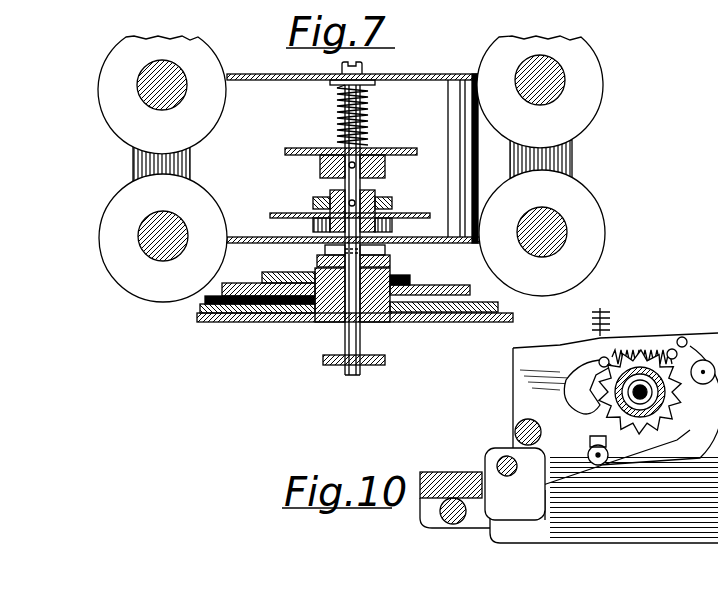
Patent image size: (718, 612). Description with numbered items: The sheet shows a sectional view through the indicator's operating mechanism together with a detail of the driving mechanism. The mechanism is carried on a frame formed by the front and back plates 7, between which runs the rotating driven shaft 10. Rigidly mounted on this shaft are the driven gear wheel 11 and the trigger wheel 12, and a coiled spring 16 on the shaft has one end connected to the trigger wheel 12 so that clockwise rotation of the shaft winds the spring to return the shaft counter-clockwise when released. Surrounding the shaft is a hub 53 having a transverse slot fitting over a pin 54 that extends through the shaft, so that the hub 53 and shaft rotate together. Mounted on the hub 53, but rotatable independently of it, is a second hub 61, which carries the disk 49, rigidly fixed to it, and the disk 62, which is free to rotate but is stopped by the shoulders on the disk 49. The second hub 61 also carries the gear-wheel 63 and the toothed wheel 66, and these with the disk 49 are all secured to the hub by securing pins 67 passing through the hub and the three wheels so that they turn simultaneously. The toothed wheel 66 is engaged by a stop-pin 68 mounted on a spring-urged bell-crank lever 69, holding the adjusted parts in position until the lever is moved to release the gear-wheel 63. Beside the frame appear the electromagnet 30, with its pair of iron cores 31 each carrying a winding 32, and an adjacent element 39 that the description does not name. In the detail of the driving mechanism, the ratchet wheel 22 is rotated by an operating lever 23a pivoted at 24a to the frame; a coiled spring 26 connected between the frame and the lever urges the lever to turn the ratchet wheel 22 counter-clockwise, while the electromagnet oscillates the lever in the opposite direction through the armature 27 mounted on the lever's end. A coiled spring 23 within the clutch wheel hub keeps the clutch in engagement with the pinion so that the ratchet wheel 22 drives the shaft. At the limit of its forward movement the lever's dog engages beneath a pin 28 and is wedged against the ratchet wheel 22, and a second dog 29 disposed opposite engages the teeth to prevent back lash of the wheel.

In FIG. 7, the front and back plates 7 is at (426, 74).
In FIG. 7, the driven shaft 10 is at (362, 367).
In FIG. 7, the driven gear wheel 11 is at (428, 213).
In FIG. 7, the trigger wheel 12 is at (300, 148).
In FIG. 7, the coiled spring 16 is at (372, 123).
In FIG. 7, the armature 27 is at (188, 167).
In FIG. 10, the armature 27 is at (455, 486).
In FIG. 7, the electromagnet 30 is at (99, 233).
In FIG. 7, the iron cores 31 is at (160, 262).
In FIG. 7, the winding or spool 32 is at (121, 266).
In FIG. 7, the axle 39 is at (560, 150).
In FIG. 7, the wheel or disk 49 is at (436, 278).
In FIG. 7, the hub 53 is at (317, 262).
In FIG. 7, the pin 54 is at (392, 253).
In FIG. 7, the second hub 61 is at (323, 323).
In FIG. 7, the disk 62 is at (430, 290).
In FIG. 7, the gear-wheel 63 is at (237, 322).
In FIG. 7, the toothed wheel 66 is at (468, 322).
In FIG. 7, the securing pins 67 is at (283, 318).
In FIG. 7, the stop-pin 68 is at (200, 325).
In FIG. 7, the bell-crank lever 69 is at (243, 296).
In FIG. 10, the ratchet wheel 22 is at (604, 444).
In FIG. 10, the coiled spring 23 is at (704, 360).
In FIG. 10, the operating lever 23a is at (573, 470).
In FIG. 10, the pivot 24a is at (515, 469).
In FIG. 10, the coiled spring 26 is at (572, 415).
In FIG. 10, the pin 28 is at (683, 337).
In FIG. 10, the second dog 29 is at (575, 372).